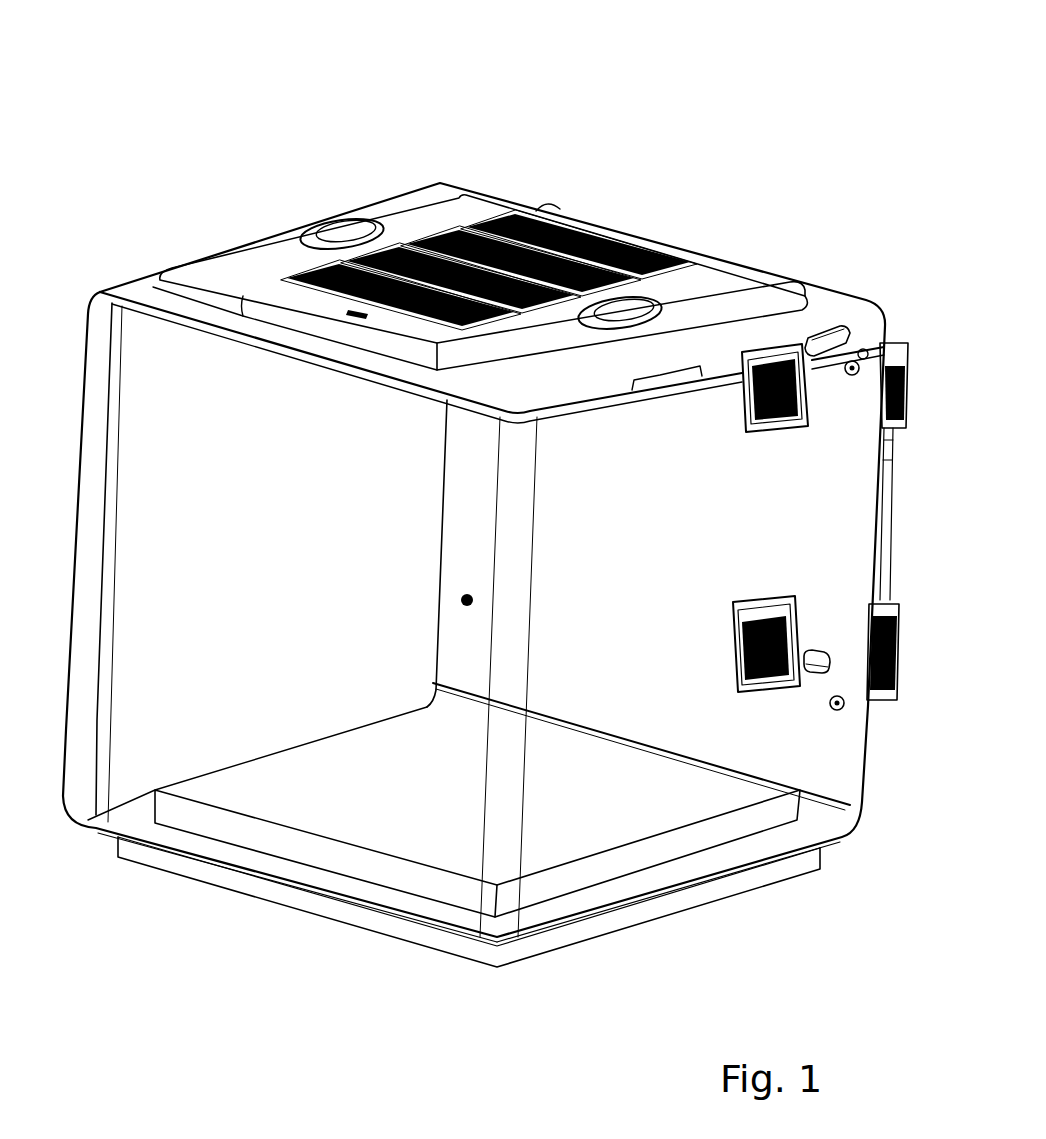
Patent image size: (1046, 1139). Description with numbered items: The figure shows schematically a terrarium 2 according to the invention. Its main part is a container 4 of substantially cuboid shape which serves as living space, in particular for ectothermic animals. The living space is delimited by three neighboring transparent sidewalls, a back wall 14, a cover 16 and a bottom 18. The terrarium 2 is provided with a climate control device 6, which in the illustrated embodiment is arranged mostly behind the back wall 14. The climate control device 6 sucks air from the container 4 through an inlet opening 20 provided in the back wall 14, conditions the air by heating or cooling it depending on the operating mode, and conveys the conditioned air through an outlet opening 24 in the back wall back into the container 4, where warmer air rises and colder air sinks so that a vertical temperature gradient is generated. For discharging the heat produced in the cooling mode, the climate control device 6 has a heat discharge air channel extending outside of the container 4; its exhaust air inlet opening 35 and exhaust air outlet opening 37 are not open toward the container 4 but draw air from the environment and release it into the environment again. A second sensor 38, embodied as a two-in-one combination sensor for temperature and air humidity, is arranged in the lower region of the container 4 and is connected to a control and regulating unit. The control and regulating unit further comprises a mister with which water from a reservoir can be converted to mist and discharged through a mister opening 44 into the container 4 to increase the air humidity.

The terrarium 2 is at (180, 124).
The container 4 is at (78, 512).
The climate control device 6 is at (890, 258).
The back wall 14 is at (822, 764).
The cover 16 is at (150, 292).
The bottom 18 is at (125, 811).
The inlet opening 20 is at (710, 653).
The outlet opening 24 is at (735, 418).
The exhaust air inlet opening 35 is at (906, 614).
The exhaust air outlet opening 37 is at (918, 382).
The second sensor 38 is at (820, 630).
The mister opening 44 is at (314, 799).